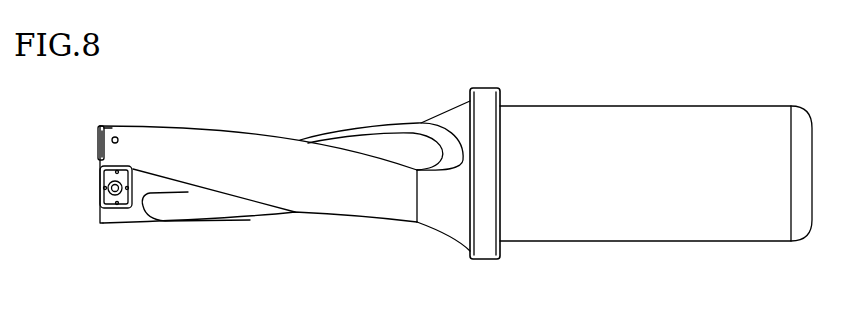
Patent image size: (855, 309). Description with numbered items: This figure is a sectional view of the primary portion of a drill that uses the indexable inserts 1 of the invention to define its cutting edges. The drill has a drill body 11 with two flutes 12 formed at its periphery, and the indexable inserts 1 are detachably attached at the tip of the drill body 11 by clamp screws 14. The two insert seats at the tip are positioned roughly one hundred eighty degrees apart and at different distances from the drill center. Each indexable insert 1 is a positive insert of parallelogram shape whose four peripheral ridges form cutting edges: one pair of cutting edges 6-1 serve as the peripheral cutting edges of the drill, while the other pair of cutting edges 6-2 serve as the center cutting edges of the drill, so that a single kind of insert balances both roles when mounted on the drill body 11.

The indexable insert 1 is at (82, 155).
The cutting edge serving as peripheral cutting edge 6-1 is at (99, 143).
The cutting edge serving as center cutting edge 6-2 is at (100, 194).
The drill body 11 is at (276, 186).
The flute 12 is at (202, 211).
The clamp screw 14 is at (112, 206).